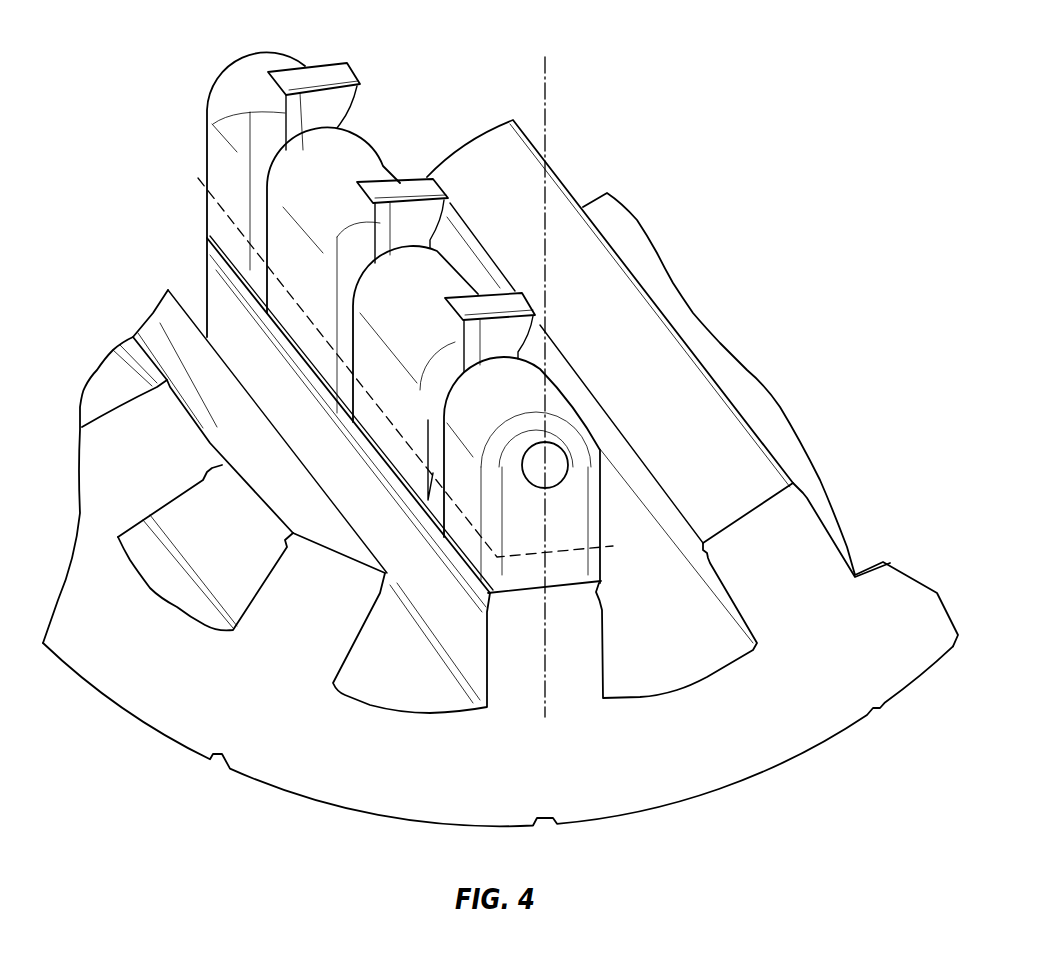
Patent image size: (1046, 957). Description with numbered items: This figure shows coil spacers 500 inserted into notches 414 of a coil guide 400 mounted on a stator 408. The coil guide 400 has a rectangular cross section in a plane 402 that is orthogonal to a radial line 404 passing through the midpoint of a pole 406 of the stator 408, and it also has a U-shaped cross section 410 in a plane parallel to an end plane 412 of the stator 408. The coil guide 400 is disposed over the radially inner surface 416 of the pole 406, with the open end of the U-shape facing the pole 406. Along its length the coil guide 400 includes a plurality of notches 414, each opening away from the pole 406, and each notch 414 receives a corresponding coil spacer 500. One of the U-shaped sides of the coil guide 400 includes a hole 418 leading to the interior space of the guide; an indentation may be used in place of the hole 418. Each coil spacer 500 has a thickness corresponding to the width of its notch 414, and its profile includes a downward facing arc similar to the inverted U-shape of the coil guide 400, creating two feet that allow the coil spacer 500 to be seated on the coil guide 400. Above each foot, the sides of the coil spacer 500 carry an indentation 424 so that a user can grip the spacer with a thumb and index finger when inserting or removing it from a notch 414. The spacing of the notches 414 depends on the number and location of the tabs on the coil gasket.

The coil guide 400 is at (213, 80).
The plane 402 is at (224, 222).
The radial line 404 is at (549, 105).
The pole 406 is at (517, 687).
The stator 408 is at (916, 530).
The U-shaped cross section 410 is at (567, 573).
The end plane 412 is at (837, 690).
The notch 414 is at (345, 258).
The inner surface 416 is at (600, 250).
The hole 418 is at (570, 455).
The indentation 424 is at (357, 101).
The coil spacer 500 is at (365, 65).